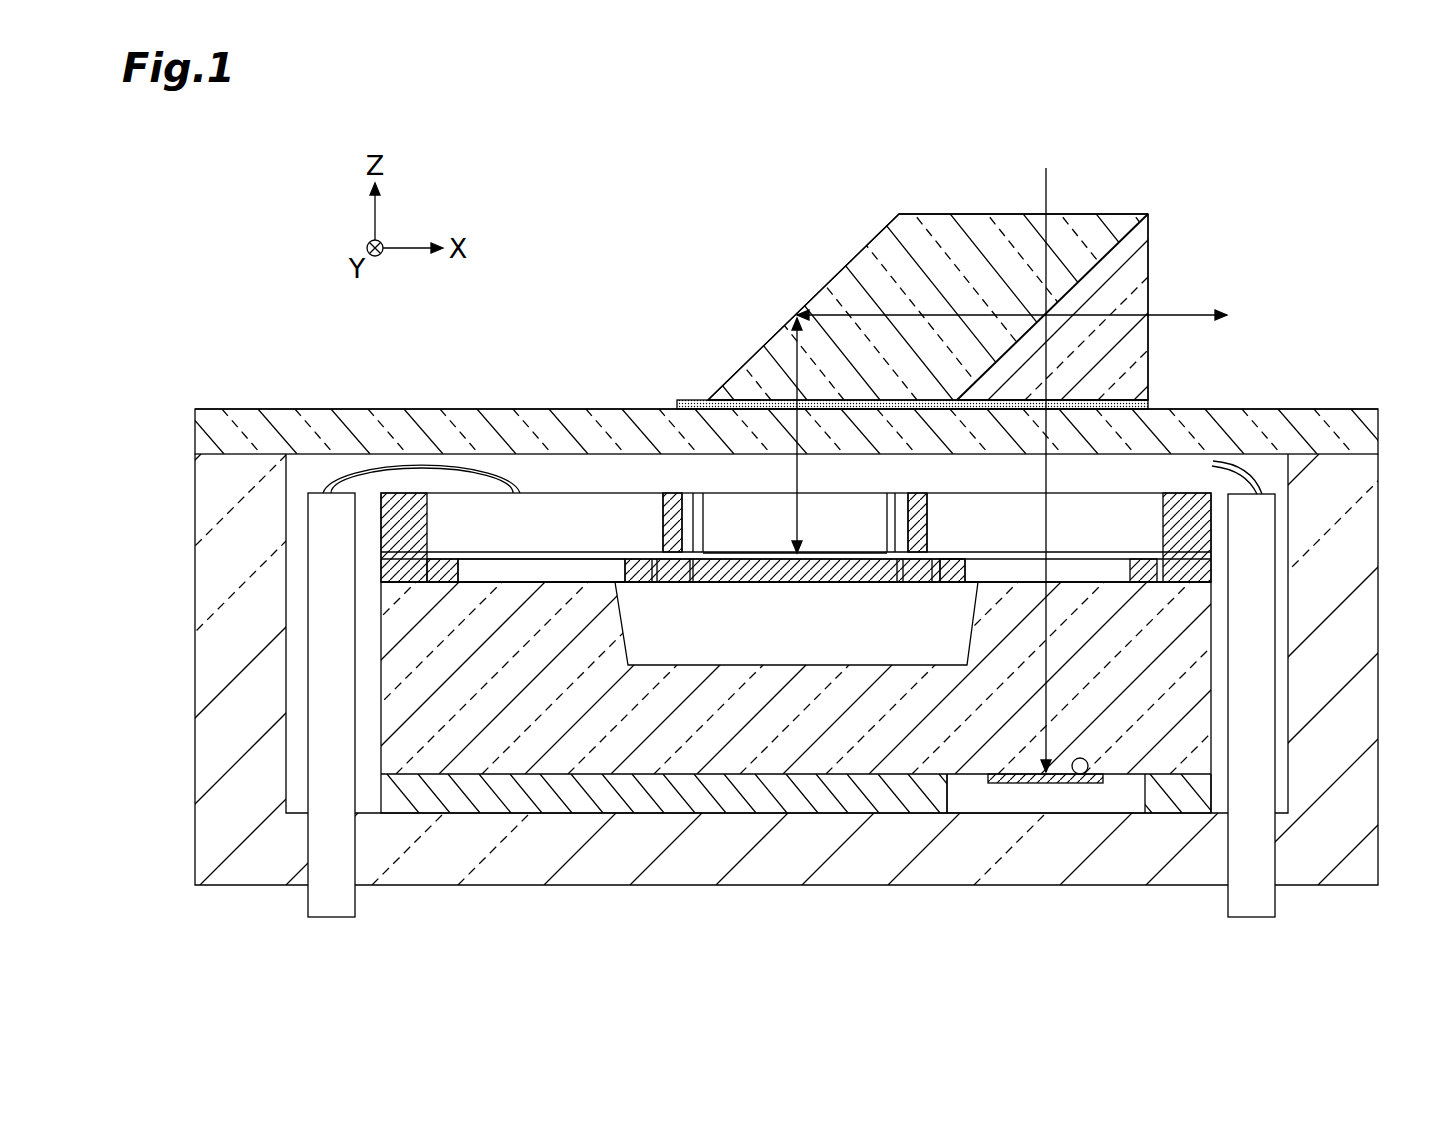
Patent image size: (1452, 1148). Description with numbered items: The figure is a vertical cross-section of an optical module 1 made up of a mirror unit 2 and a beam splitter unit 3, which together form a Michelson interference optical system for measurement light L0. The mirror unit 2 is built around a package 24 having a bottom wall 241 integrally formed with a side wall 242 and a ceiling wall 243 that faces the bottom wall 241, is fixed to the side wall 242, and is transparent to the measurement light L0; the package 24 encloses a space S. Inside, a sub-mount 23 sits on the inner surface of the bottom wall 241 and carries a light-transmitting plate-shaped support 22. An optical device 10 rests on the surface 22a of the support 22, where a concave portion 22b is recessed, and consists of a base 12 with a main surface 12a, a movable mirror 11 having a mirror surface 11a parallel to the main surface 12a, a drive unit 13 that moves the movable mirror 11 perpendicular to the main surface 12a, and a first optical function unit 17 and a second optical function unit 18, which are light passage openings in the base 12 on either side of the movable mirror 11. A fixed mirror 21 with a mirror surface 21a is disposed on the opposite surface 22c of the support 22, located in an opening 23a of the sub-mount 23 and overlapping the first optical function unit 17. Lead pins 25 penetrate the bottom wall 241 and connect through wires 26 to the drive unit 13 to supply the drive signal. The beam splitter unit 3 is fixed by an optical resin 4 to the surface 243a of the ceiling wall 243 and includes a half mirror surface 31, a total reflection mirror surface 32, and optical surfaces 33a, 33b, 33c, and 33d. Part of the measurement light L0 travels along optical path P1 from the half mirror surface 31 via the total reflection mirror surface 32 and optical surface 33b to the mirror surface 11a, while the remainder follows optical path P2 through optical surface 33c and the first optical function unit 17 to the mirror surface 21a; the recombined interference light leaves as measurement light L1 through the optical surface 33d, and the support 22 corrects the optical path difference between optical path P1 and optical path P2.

The optical module 1 is at (1303, 157).
The mirror unit 2 is at (278, 404).
The beam splitter unit 3 is at (1136, 207).
The optical resin 4 is at (720, 399).
The optical device 10 is at (567, 488).
The movable mirror 11 is at (798, 585).
The mirror surface 11a is at (855, 552).
The base 12 is at (385, 532).
The main surface 12a is at (395, 588).
The drive unit 13 is at (955, 585).
The first optical function unit 17 is at (1137, 536).
The second optical function unit 18 is at (482, 536).
The fixed mirror 21 is at (1030, 785).
The mirror surface 21a is at (1082, 776).
The support 22 is at (1200, 655).
The surface 22a is at (1213, 561).
The concave portion 22b is at (707, 643).
The surface 22c is at (1213, 802).
The sub-mount 23 is at (668, 800).
The opening 23a is at (950, 800).
The package 24 is at (483, 886).
The lead pins 25 is at (330, 918).
The wires 26 is at (415, 456).
The half mirror surface 31 is at (1092, 265).
The total reflection mirror surface 32 is at (840, 282).
The optical surface 33a is at (970, 213).
The optical surface 33b is at (712, 403).
The optical surface 33c is at (1113, 405).
The optical surface 33d is at (1150, 230).
The bottom wall 241 is at (760, 886).
The side wall 242 is at (200, 742).
The ceiling wall 243 is at (1379, 429).
The surface 243a is at (1341, 408).
The measurement light L0 is at (1047, 168).
The measurement light L1 is at (1210, 315).
The optical path P1 is at (796, 478).
The optical path P2 is at (1052, 478).
The space S is at (634, 490).